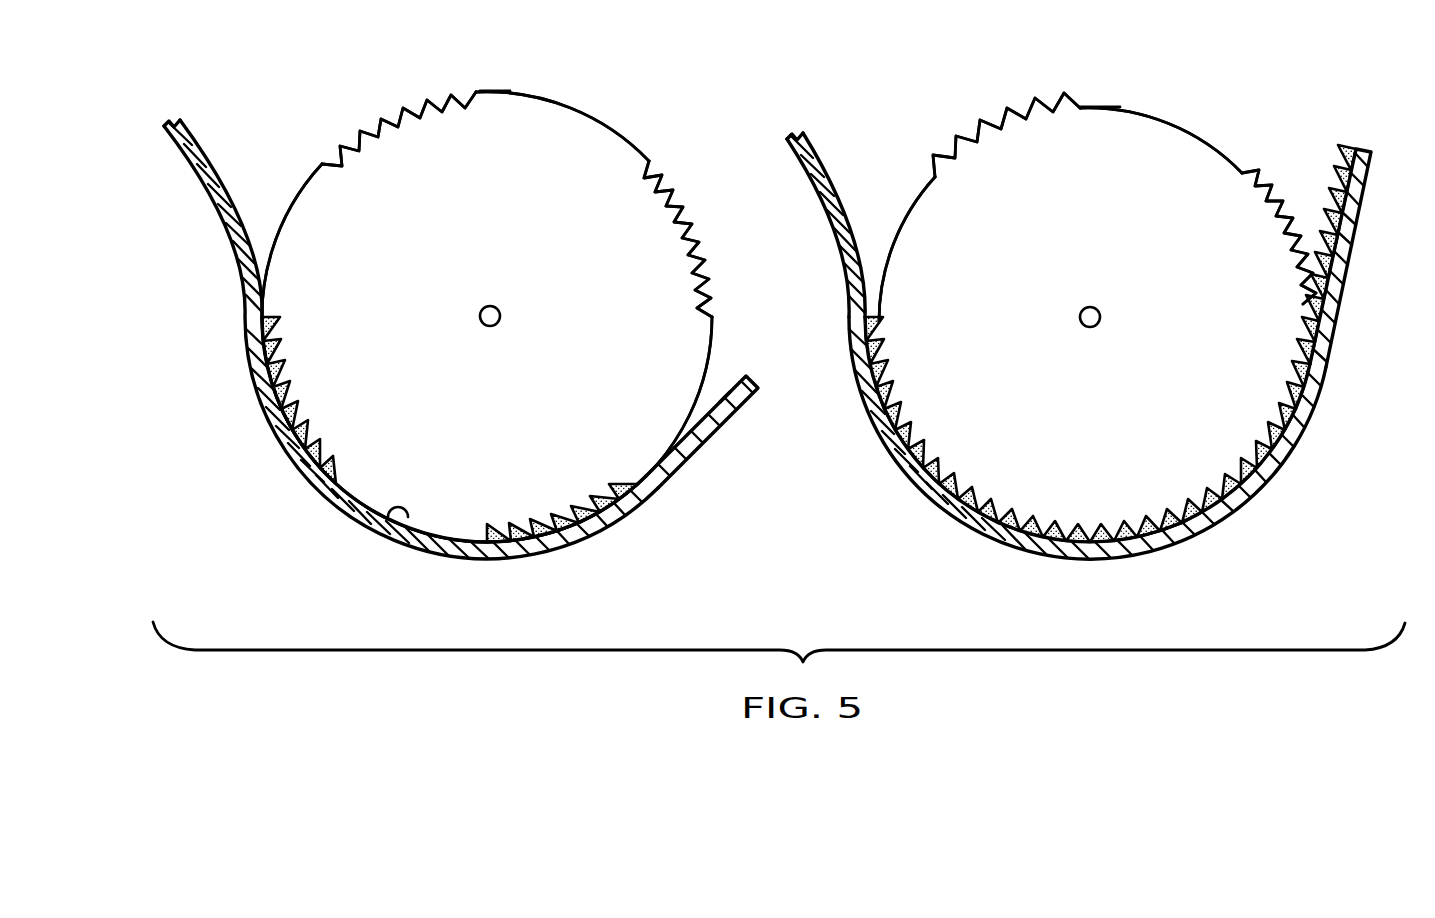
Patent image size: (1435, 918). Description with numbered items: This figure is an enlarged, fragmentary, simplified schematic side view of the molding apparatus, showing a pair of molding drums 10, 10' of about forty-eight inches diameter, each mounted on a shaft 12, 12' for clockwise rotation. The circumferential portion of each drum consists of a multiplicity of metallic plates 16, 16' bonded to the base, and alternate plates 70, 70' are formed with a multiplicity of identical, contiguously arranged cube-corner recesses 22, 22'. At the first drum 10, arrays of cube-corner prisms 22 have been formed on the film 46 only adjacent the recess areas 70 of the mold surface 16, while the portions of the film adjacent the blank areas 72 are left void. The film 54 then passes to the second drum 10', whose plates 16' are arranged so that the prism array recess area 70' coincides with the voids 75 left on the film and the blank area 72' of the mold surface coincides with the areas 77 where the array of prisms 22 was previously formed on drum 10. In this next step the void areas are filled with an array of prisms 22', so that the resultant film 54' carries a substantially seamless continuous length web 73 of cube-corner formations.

The molding drum 10 is at (487, 317).
The shaft 12 is at (521, 335).
The metallic plate 16 is at (502, 63).
The cube-corner recesses 22 is at (800, 295).
The film 46 is at (190, 127).
The film 54 is at (755, 282).
The prism array plate 70 is at (509, 278).
The blank area 72 is at (476, 317).
The voids 75 is at (398, 522).
The prism-bearing film areas 77 is at (563, 527).
The molding drum 10' is at (1097, 207).
The shaft 12' is at (1125, 336).
The metallic plate 16' is at (1133, 76).
The array of prisms 22' is at (1087, 459).
The resultant film 54' is at (1360, 258).
The prism array recess area 70' is at (1090, 298).
The blank area 72' is at (1060, 303).
The continuous web 73 is at (1370, 197).